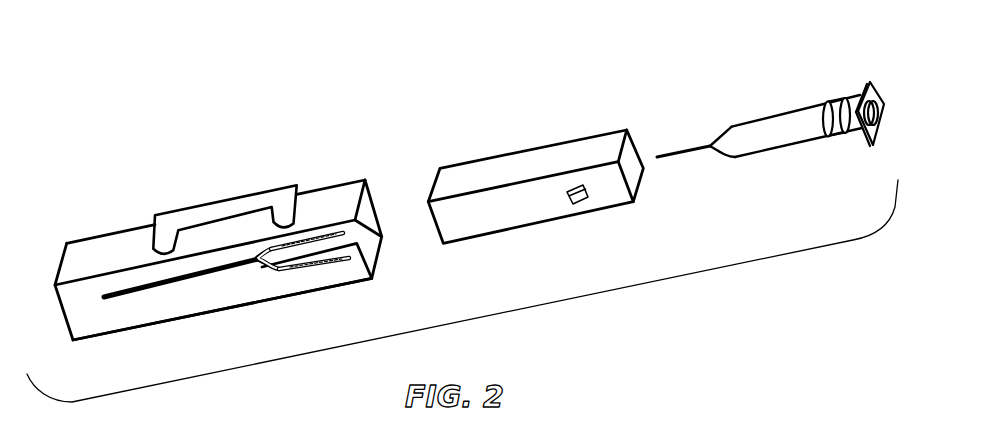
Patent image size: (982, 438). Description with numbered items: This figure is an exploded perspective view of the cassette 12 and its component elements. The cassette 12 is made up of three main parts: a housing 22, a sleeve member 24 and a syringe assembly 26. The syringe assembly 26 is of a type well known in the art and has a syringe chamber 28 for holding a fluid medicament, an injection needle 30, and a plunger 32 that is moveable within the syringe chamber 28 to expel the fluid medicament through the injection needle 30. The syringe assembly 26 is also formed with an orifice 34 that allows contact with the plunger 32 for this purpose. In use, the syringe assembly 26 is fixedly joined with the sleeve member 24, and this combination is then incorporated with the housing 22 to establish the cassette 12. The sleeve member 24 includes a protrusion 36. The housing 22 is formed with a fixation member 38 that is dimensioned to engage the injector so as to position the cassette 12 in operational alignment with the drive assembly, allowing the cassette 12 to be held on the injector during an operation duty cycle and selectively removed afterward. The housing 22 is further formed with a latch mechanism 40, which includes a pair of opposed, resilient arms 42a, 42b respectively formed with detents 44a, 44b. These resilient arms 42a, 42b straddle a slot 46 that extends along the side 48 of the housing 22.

The cassette 12 is at (413, 139).
The housing 22 is at (106, 243).
The sleeve member 24 is at (523, 165).
The syringe assembly 26 is at (733, 124).
The syringe chamber 28 is at (797, 122).
The injection needle 30 is at (683, 157).
The plunger 32 is at (841, 135).
The orifice 34 is at (884, 96).
The protrusion 36 is at (571, 207).
The fixation member 38 is at (227, 203).
The latch mechanism 40 is at (262, 270).
The resilient arm 42a is at (288, 250).
The resilient arm 42b is at (305, 272).
The detent 44a is at (325, 233).
The detent 44b is at (373, 258).
The slot 46 is at (133, 292).
The side 48 is at (78, 302).